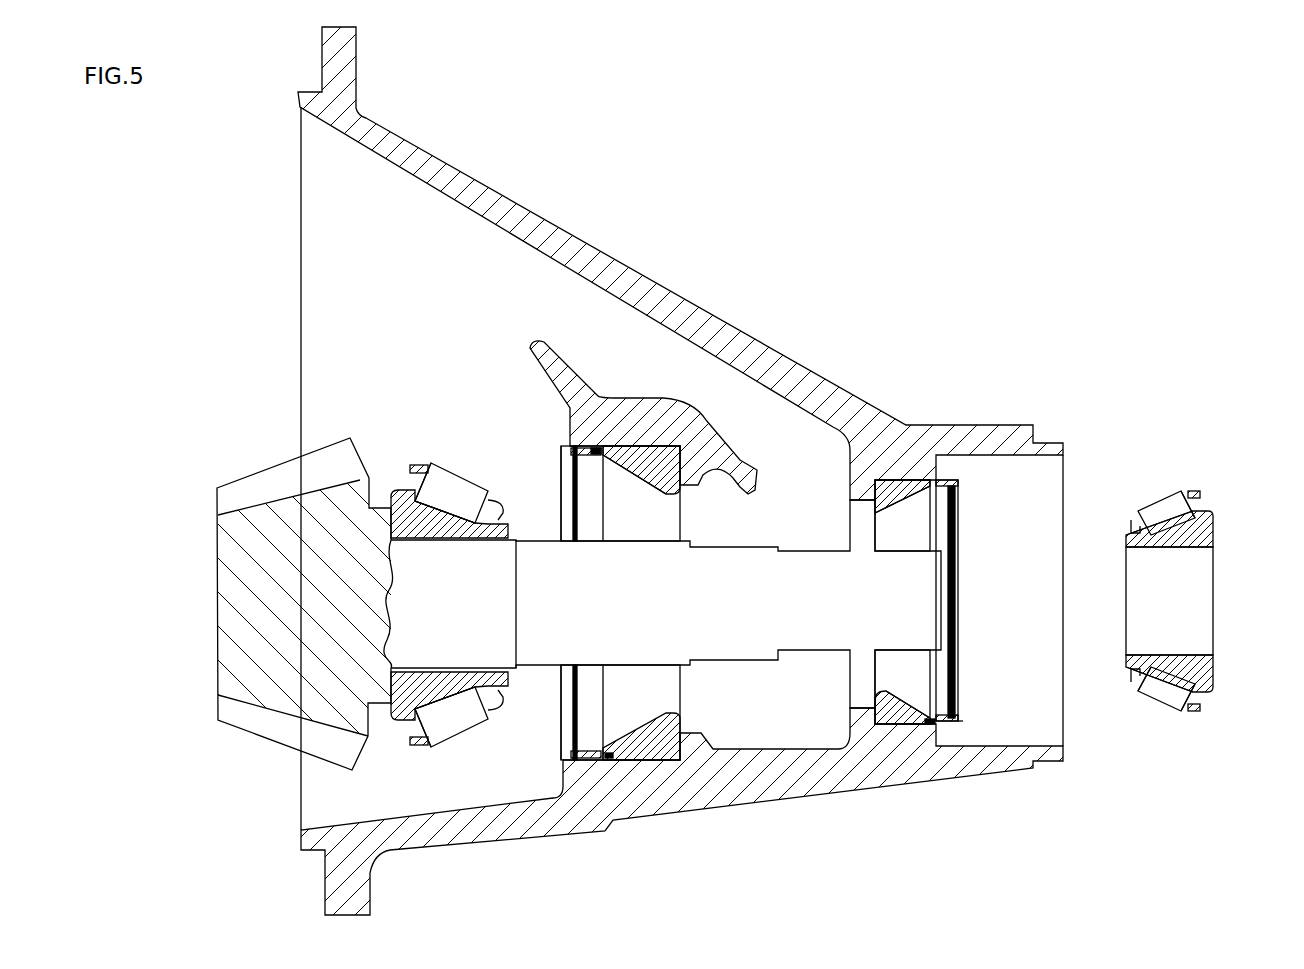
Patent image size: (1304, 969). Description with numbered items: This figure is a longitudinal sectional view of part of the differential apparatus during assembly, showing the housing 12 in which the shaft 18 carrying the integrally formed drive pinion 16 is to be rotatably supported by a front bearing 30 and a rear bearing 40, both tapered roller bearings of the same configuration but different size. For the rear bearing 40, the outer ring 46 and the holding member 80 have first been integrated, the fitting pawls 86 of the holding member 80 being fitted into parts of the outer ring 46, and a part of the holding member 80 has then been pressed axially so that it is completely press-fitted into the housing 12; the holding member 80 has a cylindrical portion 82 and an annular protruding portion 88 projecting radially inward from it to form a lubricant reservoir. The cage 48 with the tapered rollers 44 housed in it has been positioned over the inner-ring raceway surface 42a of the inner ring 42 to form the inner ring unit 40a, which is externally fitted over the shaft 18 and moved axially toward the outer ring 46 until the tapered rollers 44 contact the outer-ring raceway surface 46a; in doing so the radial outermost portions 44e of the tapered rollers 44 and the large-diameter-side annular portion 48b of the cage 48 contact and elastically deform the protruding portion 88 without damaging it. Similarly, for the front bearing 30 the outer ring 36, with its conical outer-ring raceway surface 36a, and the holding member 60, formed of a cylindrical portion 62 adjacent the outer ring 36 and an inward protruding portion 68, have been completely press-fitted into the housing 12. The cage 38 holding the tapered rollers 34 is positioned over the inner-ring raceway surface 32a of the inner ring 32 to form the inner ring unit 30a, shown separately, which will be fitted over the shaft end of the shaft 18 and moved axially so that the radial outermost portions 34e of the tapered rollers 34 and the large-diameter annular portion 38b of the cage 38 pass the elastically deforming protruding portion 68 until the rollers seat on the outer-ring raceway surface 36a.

The housing 12 is at (402, 149).
The drive pinion 16 is at (240, 484).
The shaft 18 is at (735, 650).
The front bearing 30 is at (895, 598).
The inner ring unit 30a is at (1142, 690).
The inner ring 32 is at (1167, 507).
The inner-ring raceway surface 32a is at (1160, 669).
The tapered rollers 34 is at (1152, 500).
The radial outermost portions 34e is at (1172, 703).
The outer ring 36 is at (885, 470).
The outer-ring raceway surface 36a is at (902, 492).
The cage 38 is at (1132, 513).
The large-diameter annular portion 38b is at (1194, 700).
The rear bearing 40 is at (517, 653).
The inner ring unit 40a is at (464, 727).
The inner ring 42 is at (468, 512).
The inner-ring raceway surface 42a is at (438, 740).
The tapered rollers 44 is at (440, 468).
The radial outermost portions 44e is at (420, 727).
The outer ring 46 is at (640, 445).
The outer-ring raceway surface 46a is at (612, 455).
The cage 48 is at (410, 455).
The large-diameter-side annular portion 48b is at (400, 732).
The holding member 60 is at (940, 474).
The cylindrical portion 62 is at (932, 718).
The protruding portion 68 is at (953, 708).
The holding member 80 is at (583, 438).
The cylindrical portion 82 is at (569, 757).
The fitting pawls 86 is at (600, 757).
The protruding portion 88 is at (553, 752).